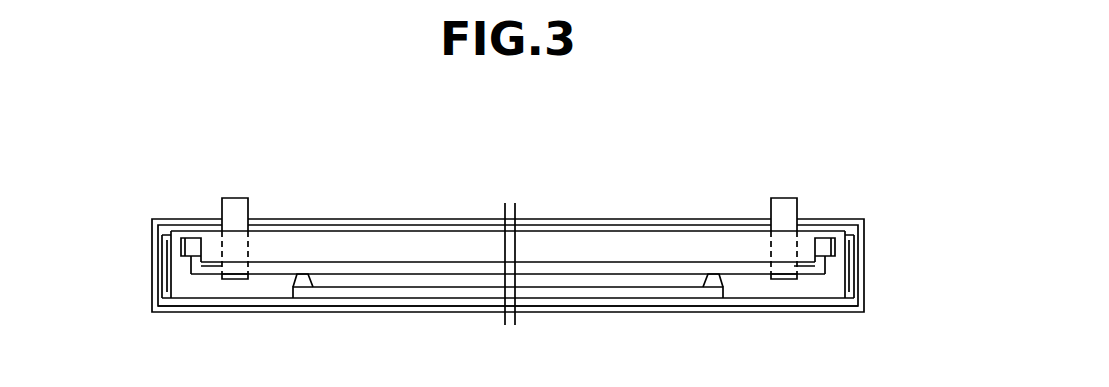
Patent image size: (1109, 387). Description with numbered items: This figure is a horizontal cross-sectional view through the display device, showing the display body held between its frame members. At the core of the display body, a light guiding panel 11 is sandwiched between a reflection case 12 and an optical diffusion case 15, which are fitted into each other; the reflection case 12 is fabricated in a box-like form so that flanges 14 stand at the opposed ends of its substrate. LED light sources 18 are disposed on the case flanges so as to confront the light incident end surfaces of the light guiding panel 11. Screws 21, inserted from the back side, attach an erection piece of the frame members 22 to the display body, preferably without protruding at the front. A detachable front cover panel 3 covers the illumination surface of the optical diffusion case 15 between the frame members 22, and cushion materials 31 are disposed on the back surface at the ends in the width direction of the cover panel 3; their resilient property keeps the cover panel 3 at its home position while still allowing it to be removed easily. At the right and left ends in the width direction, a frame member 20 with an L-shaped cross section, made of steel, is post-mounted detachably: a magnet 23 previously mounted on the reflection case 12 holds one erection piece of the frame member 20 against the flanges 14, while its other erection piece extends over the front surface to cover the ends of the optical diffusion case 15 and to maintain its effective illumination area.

The front cover panel 3 is at (413, 292).
The light guiding panel 11 is at (448, 246).
The reflection case 12 is at (553, 226).
The flanges 14 is at (187, 297).
The optical diffusion case 15 is at (597, 268).
The LED light sources 18 is at (194, 238).
The frame member 20 is at (238, 302).
The screws 21 is at (237, 211).
The frame members 22 is at (700, 298).
The magnet 23 is at (162, 254).
The cushion materials 31 is at (295, 280).